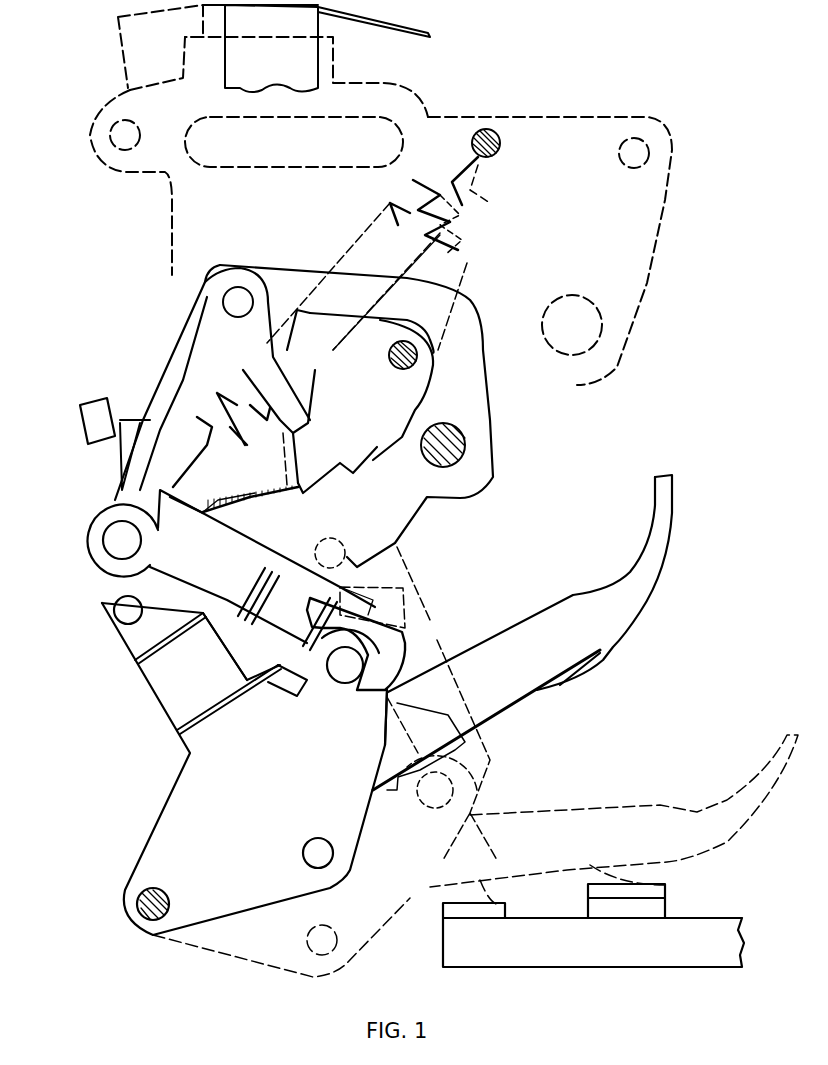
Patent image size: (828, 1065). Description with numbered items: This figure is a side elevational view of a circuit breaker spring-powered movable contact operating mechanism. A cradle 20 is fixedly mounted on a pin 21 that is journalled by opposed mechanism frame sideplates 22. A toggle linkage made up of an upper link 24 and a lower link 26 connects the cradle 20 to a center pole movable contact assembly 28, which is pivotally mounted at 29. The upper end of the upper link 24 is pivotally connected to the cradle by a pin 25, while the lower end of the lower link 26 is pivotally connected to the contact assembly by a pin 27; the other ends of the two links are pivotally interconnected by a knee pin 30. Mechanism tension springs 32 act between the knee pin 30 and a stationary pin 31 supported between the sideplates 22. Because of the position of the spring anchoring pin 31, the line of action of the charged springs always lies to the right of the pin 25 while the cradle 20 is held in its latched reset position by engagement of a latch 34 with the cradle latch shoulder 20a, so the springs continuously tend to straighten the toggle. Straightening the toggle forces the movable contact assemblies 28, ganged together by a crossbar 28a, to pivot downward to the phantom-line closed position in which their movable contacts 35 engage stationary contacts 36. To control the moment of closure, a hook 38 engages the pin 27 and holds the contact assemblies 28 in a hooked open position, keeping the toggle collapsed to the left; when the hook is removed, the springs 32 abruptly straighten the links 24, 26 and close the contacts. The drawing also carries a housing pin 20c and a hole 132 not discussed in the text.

The cradle 20 is at (470, 393).
The cradle latch shoulder 20a is at (130, 423).
The housing pin 20c is at (478, 318).
The pin 21 is at (455, 450).
The mechanism frame sideplates 22 is at (580, 239).
The upper link 24 is at (258, 472).
The pin 25 is at (232, 290).
The lower link 26 is at (224, 562).
The pin 27 is at (341, 680).
The movable contact assembly 28 is at (177, 822).
The crossbar 28a is at (165, 688).
The pivot 29 is at (145, 893).
The knee pin 30 is at (118, 555).
The stationary pin 31 is at (486, 130).
The mechanism tension springs 32 is at (426, 180).
The latch 34 is at (90, 425).
The movable contacts 35 is at (550, 683).
The stationary contacts 36 is at (590, 888).
The hook 38 is at (400, 645).
The hole 132 is at (120, 620).